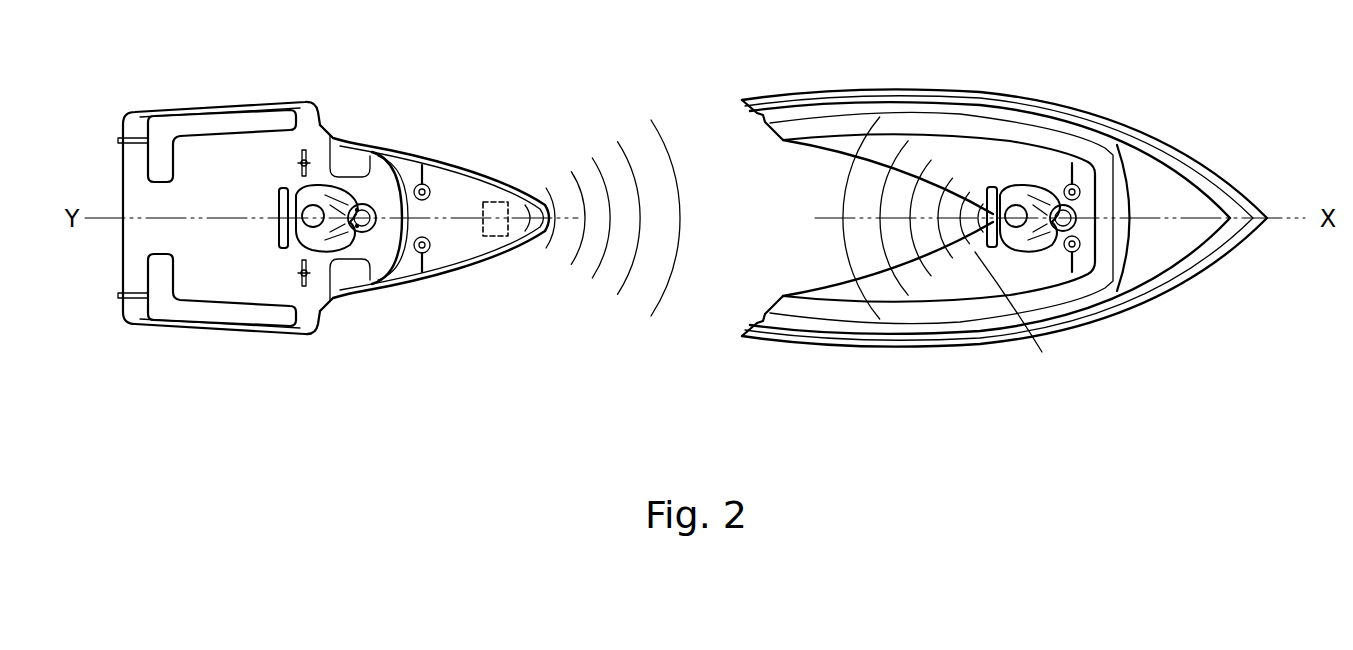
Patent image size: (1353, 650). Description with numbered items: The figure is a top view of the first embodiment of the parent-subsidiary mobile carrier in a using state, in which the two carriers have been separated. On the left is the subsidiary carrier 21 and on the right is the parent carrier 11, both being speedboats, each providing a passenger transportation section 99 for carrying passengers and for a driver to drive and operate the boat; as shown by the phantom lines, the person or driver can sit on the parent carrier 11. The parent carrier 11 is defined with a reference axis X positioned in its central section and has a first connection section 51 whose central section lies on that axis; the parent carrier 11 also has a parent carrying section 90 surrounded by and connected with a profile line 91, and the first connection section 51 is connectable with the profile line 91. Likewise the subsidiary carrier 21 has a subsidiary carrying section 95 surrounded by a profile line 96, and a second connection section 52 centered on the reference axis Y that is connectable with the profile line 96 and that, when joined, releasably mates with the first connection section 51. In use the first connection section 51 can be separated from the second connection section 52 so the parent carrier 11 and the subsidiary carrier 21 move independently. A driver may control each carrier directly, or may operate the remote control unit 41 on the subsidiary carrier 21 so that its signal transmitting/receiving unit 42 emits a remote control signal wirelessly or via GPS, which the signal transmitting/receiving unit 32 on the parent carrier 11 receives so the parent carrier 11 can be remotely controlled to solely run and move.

The parent carrier 11 is at (1151, 131).
The subsidiary carrier 21 is at (212, 103).
The signal transmitting/receiving unit 32 is at (1013, 185).
The remote control unit 41 is at (377, 213).
The signal transmitting/receiving unit 42 is at (490, 200).
The first connection section 51 is at (1015, 320).
The second connection section 52 is at (523, 192).
The parent carrying section 90 is at (953, 127).
The profile line 91 is at (905, 346).
The subsidiary carrying section 95 is at (266, 140).
The profile line 96 is at (237, 338).
The passenger transportation section 99 is at (321, 268).